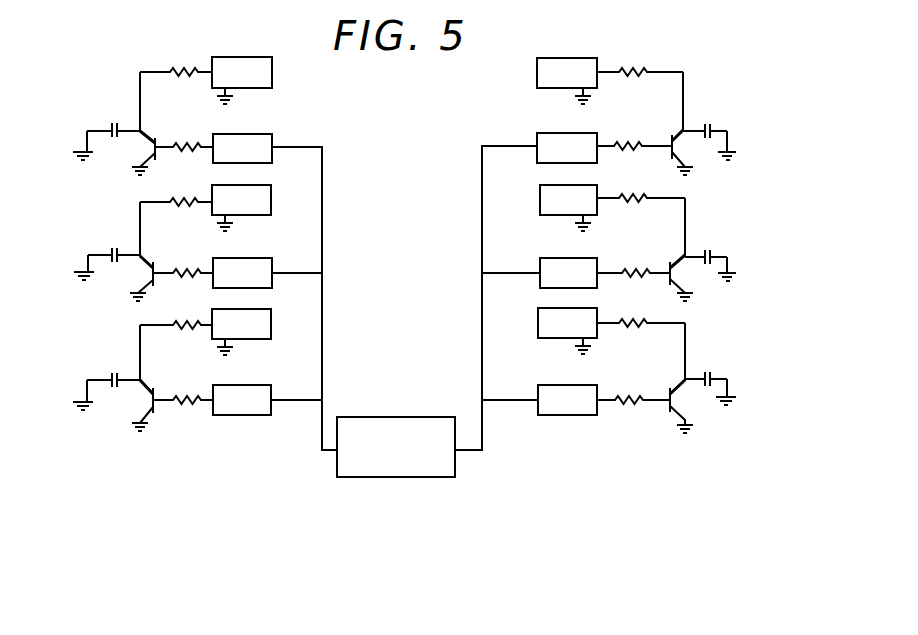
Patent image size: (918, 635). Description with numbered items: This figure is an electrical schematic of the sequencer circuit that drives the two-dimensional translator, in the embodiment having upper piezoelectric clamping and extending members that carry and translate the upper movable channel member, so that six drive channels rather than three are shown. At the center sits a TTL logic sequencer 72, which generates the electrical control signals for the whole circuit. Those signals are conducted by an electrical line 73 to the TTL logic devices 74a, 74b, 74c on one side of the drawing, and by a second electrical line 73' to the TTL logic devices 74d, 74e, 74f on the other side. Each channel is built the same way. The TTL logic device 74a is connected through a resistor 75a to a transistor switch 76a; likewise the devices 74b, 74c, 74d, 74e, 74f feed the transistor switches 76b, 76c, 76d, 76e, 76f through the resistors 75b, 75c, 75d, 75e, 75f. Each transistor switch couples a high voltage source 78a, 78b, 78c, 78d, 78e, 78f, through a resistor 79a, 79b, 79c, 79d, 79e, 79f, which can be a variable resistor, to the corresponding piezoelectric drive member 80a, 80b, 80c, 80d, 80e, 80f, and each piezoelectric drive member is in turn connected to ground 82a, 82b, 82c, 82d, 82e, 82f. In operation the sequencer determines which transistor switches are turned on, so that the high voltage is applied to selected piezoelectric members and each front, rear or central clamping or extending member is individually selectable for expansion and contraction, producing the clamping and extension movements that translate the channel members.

The TTL logic sequencer 72 is at (405, 417).
The electrical line 73 is at (481, 298).
The electrical line 73' is at (327, 298).
The TTL logic device 74a is at (552, 133).
The TTL logic device 74b is at (558, 258).
The TTL logic device 74c is at (558, 385).
The TTL logic device 74d is at (262, 134).
The TTL logic device 74e is at (235, 258).
The TTL logic device 74f is at (242, 385).
The resistor 75a is at (628, 144).
The resistor 75b is at (630, 270).
The resistor 75c is at (640, 384).
The resistor 75d is at (190, 146).
The resistor 75e is at (183, 270).
The resistor 75f is at (186, 397).
The transistor switch 76a is at (665, 152).
The transistor switch 76b is at (667, 278).
The transistor switch 76c is at (668, 408).
The transistor switch 76d is at (155, 142).
The transistor switch 76e is at (152, 280).
The transistor switch 76f is at (152, 406).
The high voltage source 78a is at (555, 58).
The high voltage source 78b is at (568, 208).
The high voltage source 78c is at (556, 310).
The high voltage source 78d is at (252, 57).
The high voltage source 78e is at (250, 185).
The high voltage source 78f is at (250, 309).
The resistor 79a is at (636, 67).
The resistor 79b is at (622, 194).
The resistor 79c is at (635, 310).
The resistor 79d is at (176, 67).
The resistor 79e is at (190, 186).
The resistor 79f is at (184, 323).
The piezoelectric drive member 80a is at (707, 122).
The piezoelectric drive member 80b is at (707, 250).
The piezoelectric drive member 80c is at (707, 370).
The piezoelectric drive member 80d is at (110, 123).
The piezoelectric drive member 80e is at (115, 245).
The piezoelectric drive member 80f is at (117, 372).
The ground 82a is at (730, 146).
The ground 82b is at (735, 273).
The ground 82c is at (732, 394).
The ground 82d is at (98, 160).
The ground 82e is at (78, 268).
The ground 82f is at (79, 398).